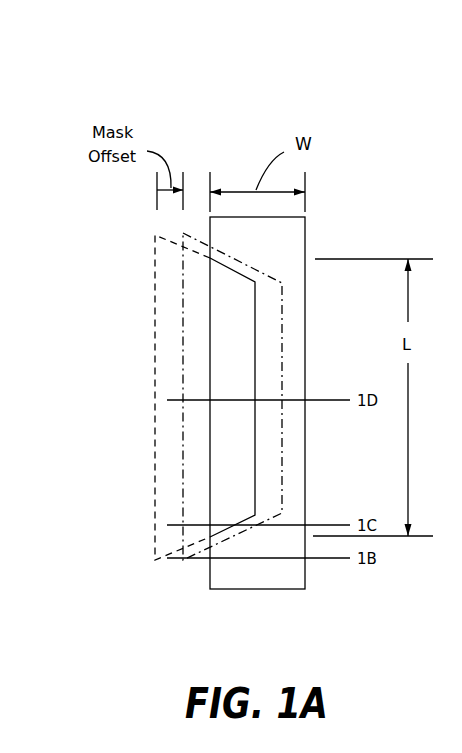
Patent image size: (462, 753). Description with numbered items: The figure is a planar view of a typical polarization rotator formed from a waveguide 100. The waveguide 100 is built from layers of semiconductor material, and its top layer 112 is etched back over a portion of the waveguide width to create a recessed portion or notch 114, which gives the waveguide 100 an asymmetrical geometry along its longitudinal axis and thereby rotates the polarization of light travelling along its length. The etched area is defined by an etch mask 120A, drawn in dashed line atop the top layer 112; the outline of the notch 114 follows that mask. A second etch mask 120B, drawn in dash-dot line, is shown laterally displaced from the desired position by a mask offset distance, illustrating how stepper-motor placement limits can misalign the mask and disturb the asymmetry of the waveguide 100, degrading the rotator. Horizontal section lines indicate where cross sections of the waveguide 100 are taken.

The waveguide 100 is at (152, 62).
The top layer 112 is at (290, 251).
The notch 114 is at (244, 316).
The etch mask 120A is at (155, 235).
The etch mask 120B is at (192, 348).